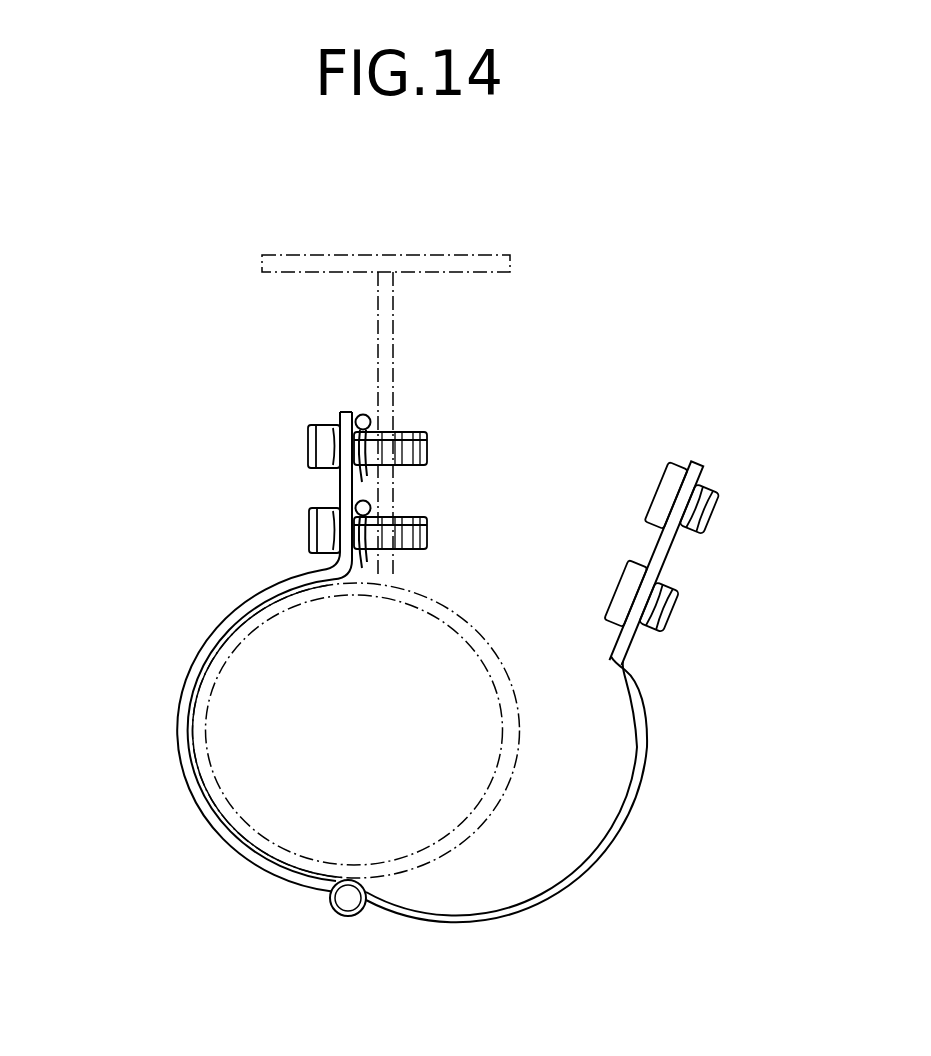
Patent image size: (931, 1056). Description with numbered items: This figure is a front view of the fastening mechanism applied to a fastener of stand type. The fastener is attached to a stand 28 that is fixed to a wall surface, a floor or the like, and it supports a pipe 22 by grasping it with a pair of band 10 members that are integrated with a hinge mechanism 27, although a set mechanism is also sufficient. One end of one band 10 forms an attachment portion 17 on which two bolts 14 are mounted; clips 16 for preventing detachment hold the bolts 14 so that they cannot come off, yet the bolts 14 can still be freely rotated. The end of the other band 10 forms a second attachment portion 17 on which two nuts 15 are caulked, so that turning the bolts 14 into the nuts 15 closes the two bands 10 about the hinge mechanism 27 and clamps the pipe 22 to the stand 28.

The band 10 is at (185, 783).
The bolt 14 is at (328, 452).
The nut 15 is at (700, 513).
The clip 16 is at (371, 419).
The attachment portion 17 is at (340, 412).
The pipe 22 is at (273, 853).
The hinge mechanism 27 is at (345, 905).
The stand 28 is at (383, 330).